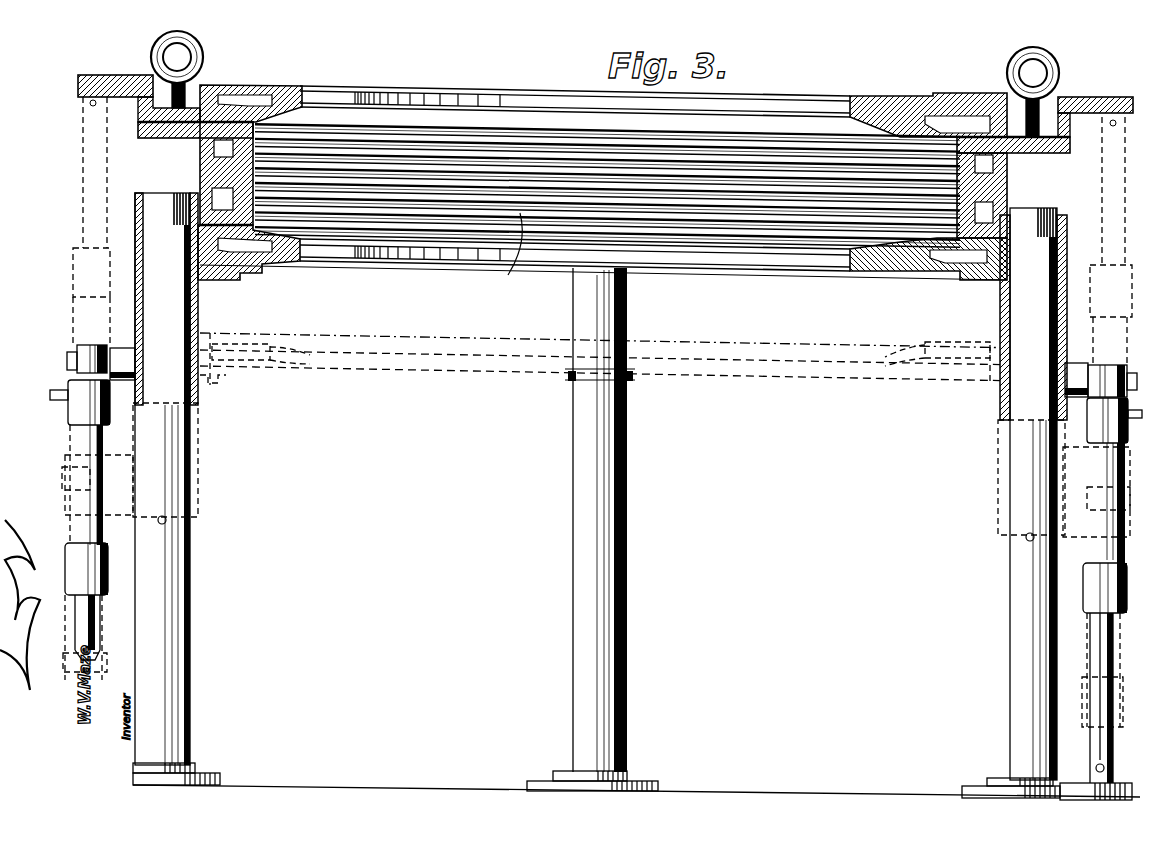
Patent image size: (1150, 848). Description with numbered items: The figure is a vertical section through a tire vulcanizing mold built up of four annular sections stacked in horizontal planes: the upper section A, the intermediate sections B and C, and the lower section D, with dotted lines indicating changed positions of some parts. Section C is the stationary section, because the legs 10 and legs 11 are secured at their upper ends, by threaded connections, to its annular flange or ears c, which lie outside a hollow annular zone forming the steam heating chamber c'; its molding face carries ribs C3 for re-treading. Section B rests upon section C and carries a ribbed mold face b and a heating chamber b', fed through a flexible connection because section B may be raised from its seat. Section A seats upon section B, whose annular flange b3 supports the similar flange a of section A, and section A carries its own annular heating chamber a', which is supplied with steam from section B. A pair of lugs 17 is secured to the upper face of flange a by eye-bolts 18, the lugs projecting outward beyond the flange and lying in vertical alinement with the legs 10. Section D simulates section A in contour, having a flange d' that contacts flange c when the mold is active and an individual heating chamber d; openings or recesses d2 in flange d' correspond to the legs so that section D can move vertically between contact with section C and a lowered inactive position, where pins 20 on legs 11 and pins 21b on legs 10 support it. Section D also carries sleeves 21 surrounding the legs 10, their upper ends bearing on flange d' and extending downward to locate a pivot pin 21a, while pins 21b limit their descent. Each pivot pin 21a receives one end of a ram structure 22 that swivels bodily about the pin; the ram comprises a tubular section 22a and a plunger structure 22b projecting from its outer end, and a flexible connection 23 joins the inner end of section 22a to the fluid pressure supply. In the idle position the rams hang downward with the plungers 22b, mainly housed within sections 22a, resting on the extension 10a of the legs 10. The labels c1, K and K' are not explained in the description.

The upper mold section A is at (347, 91).
The flange of section A a is at (646, 113).
The heating chamber of section A a' is at (957, 102).
The ribbed mold face b is at (607, 152).
The heating chamber of section B b' is at (598, 159).
The annular flange of section B b3 is at (1072, 144).
The intermediate mold section B is at (201, 147).
The stationary mold section C is at (201, 180).
The ears of section C c is at (970, 242).
The heating chamber of section C c' is at (624, 203).
The port opening c1 is at (221, 200).
The ribs of section C C3 is at (511, 256).
The lower mold section D is at (310, 266).
The heating chamber of section D d is at (945, 347).
The flange of section D d' is at (1092, 240).
The openings in flange d' d2 is at (134, 224).
The legs 10 is at (192, 612).
The extension of legs 10 10a is at (1086, 782).
The legs 11 is at (622, 518).
The lugs 17 is at (122, 74).
The eye-bolts 18 is at (205, 52).
The pins 20 is at (633, 382).
The sleeves 21 is at (200, 296).
The pivot pin 21a is at (64, 354).
The pins 21b is at (166, 522).
The ram structure 22 is at (1082, 552).
The tubular section 22a is at (68, 430).
The plunger structure 22b is at (72, 190).
The flexible connection 23 is at (64, 380).
The coupling K is at (60, 402).
The coupling K' is at (1104, 421).